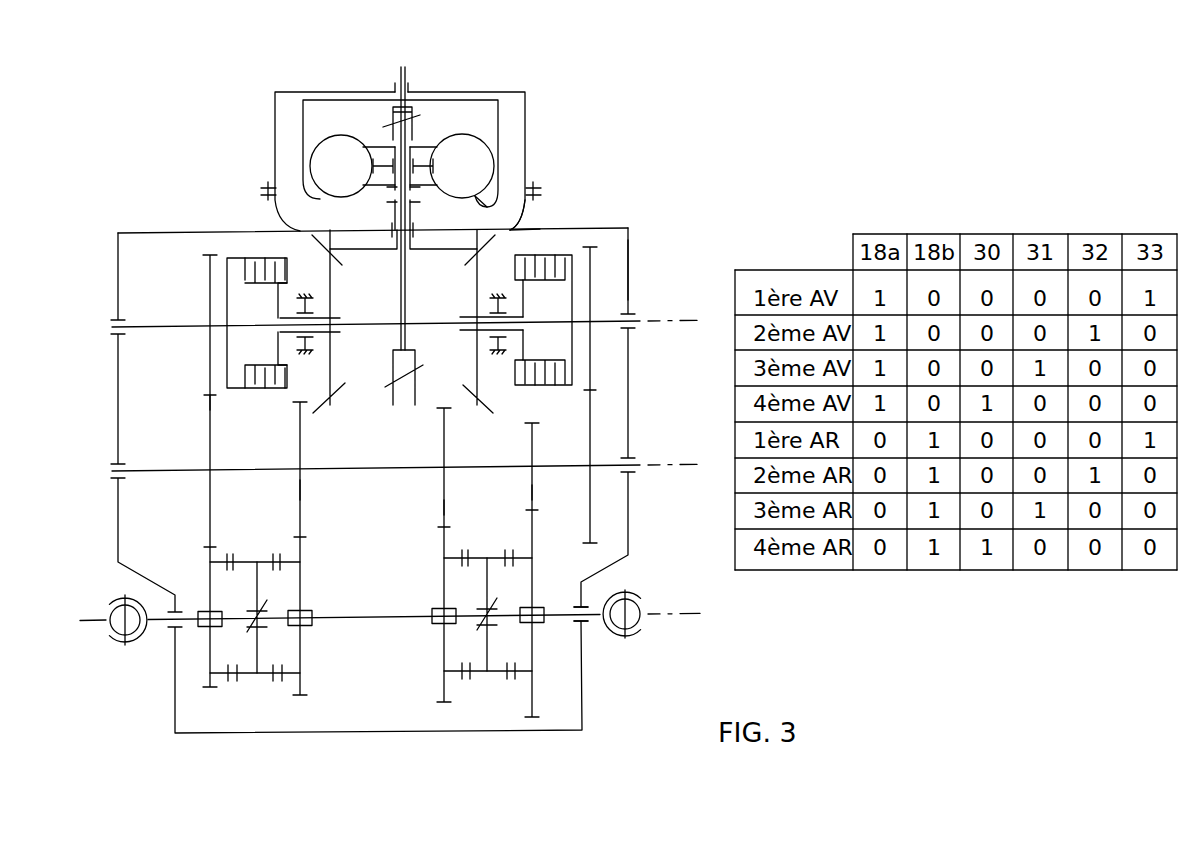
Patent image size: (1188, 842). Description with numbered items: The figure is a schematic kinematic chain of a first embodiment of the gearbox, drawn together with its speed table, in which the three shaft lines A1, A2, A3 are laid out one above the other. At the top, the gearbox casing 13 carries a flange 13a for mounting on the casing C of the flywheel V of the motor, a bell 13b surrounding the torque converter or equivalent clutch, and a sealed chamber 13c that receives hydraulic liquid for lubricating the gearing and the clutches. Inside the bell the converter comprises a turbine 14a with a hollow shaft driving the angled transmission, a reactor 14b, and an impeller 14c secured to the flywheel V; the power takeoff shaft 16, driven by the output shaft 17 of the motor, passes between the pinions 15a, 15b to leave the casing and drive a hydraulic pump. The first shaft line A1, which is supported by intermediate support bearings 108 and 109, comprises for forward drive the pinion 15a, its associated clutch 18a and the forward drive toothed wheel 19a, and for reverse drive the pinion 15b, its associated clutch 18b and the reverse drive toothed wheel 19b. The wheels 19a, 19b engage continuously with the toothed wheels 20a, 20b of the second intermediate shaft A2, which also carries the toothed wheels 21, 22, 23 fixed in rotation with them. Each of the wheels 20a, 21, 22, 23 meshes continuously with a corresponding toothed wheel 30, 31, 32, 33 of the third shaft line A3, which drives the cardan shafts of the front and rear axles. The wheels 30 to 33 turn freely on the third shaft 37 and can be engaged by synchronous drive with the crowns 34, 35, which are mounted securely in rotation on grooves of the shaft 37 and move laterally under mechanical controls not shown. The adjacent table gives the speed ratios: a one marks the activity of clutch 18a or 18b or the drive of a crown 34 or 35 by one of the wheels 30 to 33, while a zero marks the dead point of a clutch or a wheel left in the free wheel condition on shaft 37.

The casing of the flywheel C is at (275, 121).
The flywheel V is at (302, 112).
The power takeoff shaft 16 is at (397, 292).
The output shaft of the motor 17 is at (398, 83).
The turbine 14a is at (452, 133).
The reactor 14b is at (437, 163).
The impeller 14c is at (487, 205).
The flange 13a is at (535, 200).
The bell 13b is at (532, 217).
The sealed chamber 13c is at (628, 272).
The casing 13 is at (113, 262).
The intermediate support bearing 108 is at (310, 310).
The intermediate support bearing 109 is at (503, 307).
The forward drive clutch 18a is at (251, 246).
The reverse drive clutch 18b is at (552, 241).
The forward drive toothed wheel 19a is at (208, 293).
The reverse drive toothed wheel 19b is at (591, 355).
The toothed wheel 20a is at (207, 408).
The toothed wheel 20b is at (590, 508).
The pinion 15a is at (333, 410).
The pinion 15b is at (477, 408).
The toothed wheel 21 is at (297, 490).
The toothed wheel 22 is at (443, 507).
The toothed wheel 23 is at (532, 493).
The toothed wheel 30 is at (212, 657).
The toothed wheel 31 is at (302, 657).
The toothed wheel 32 is at (445, 678).
The toothed wheel 33 is at (532, 683).
The crown 34 is at (260, 672).
The crown 35 is at (487, 672).
The third shaft 37 is at (592, 617).
The first shaft line A1 is at (646, 320).
The second intermediate shaft A2 is at (646, 464).
The third shaft line A3 is at (646, 613).